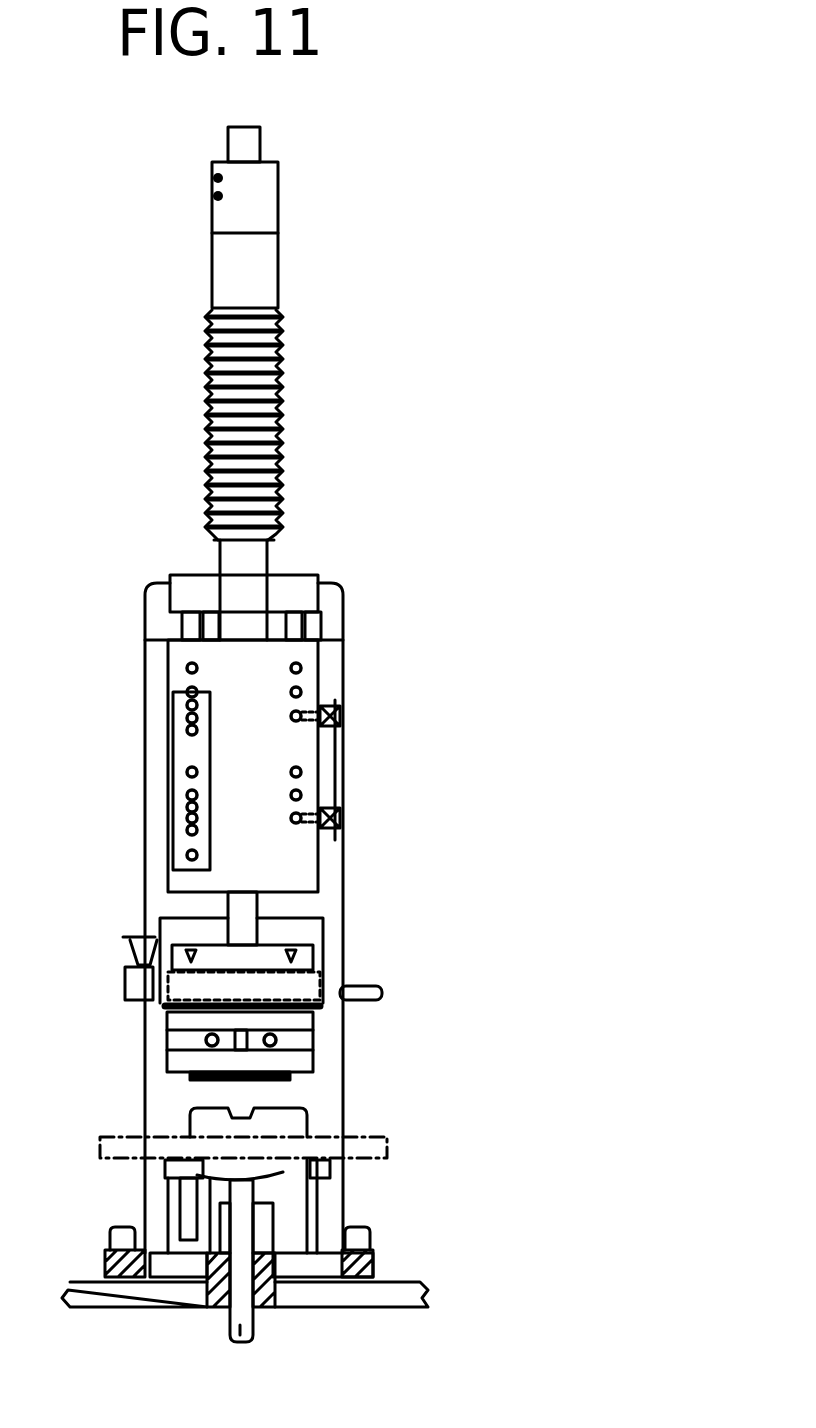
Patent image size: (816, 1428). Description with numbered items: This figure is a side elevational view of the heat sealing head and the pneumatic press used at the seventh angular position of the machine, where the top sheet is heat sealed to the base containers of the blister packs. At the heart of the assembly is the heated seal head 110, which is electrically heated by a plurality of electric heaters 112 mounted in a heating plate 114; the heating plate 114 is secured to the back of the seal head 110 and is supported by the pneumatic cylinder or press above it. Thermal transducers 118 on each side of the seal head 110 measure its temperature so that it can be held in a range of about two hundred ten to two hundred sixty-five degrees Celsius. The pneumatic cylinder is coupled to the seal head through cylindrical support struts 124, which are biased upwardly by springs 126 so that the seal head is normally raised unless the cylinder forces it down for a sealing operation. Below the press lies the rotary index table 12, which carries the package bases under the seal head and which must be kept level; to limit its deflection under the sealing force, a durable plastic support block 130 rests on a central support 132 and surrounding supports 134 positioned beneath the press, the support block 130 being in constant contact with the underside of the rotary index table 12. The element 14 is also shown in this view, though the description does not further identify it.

The rotary index table 12 is at (387, 1145).
The component 14 is at (310, 1120).
The heated seal head 110 is at (313, 1057).
The electric heaters 112 is at (210, 1046).
The heating plate 114 is at (317, 1030).
The thermal transducers 118 is at (237, 1083).
The cylindrical support struts 124 is at (262, 150).
The springs 126 is at (284, 390).
The support block 130 is at (270, 1183).
The central support 132 is at (305, 1222).
The surrounding supports 134 is at (170, 1213).